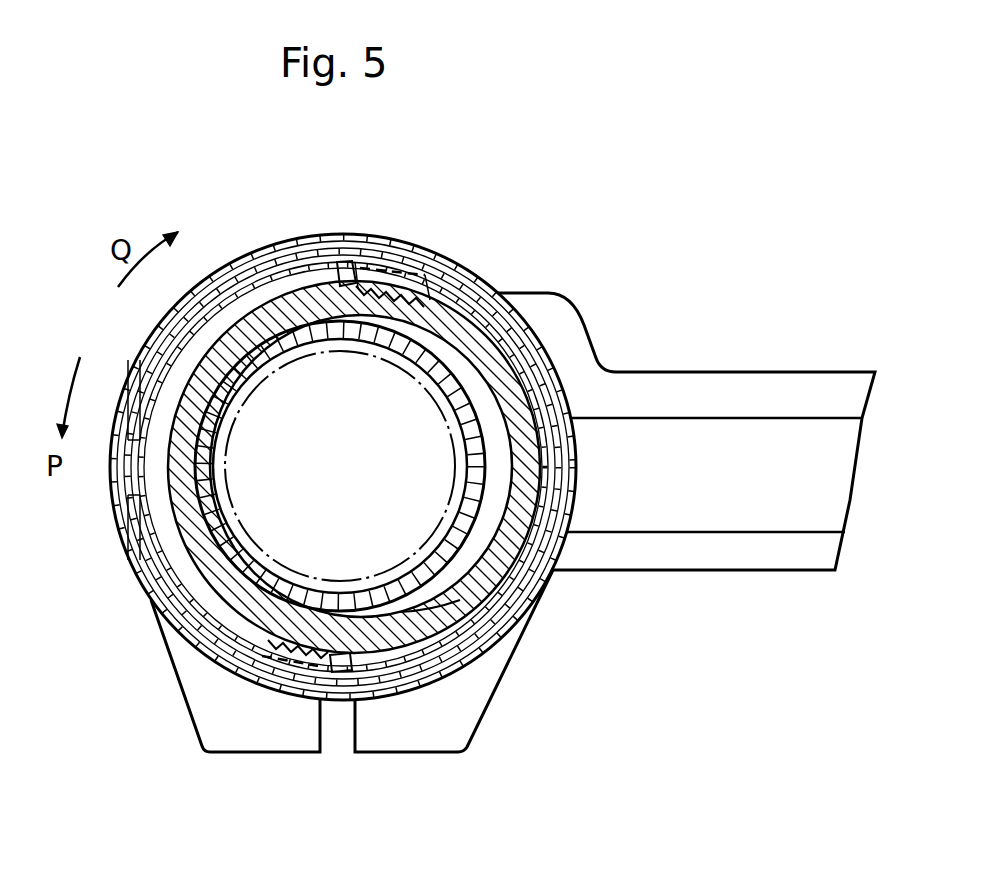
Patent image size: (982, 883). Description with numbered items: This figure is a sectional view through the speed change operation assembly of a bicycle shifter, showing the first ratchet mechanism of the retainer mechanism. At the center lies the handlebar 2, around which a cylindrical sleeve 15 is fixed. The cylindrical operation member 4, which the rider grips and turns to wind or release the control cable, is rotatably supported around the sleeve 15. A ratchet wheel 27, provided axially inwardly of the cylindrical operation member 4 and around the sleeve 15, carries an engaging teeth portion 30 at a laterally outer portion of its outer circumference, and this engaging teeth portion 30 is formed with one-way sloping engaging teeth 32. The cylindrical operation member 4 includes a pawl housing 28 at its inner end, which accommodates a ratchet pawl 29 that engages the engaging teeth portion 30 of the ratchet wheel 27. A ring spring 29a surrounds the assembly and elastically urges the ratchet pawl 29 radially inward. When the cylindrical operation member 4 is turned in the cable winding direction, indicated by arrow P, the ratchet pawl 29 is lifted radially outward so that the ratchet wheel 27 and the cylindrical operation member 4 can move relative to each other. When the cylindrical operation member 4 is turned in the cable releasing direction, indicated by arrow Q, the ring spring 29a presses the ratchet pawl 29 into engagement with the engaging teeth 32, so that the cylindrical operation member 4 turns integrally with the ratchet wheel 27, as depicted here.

The handlebar 2 is at (238, 517).
The cylindrical operation member 4 is at (300, 592).
The cylindrical sleeve 15 is at (232, 548).
The ratchet wheel 27 is at (236, 590).
The pawl housing 28 is at (348, 280).
The ratchet pawl 29 is at (398, 238).
The ring spring 29a is at (452, 267).
The engaging teeth portion 30 is at (437, 620).
The one-way sloping engaging teeth 32 is at (323, 280).